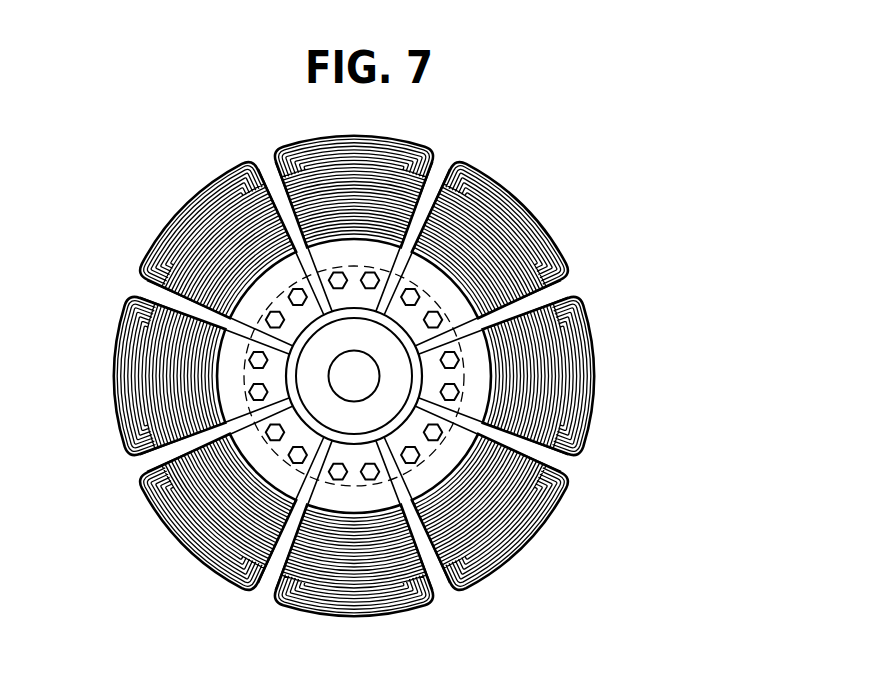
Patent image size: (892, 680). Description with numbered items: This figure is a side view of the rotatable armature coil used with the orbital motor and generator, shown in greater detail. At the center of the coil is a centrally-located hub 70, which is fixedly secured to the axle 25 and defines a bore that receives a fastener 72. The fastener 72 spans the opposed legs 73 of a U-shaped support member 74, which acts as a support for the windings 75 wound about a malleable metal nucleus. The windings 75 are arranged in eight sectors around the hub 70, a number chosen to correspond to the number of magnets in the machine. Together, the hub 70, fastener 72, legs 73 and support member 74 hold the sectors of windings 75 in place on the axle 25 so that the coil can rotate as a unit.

The hub 70 is at (446, 436).
The fastener 72 is at (385, 266).
The opposed legs 73 is at (477, 385).
The U-shaped support member 74 is at (512, 288).
The windings 75 is at (199, 203).
The axle 25 is at (443, 313).